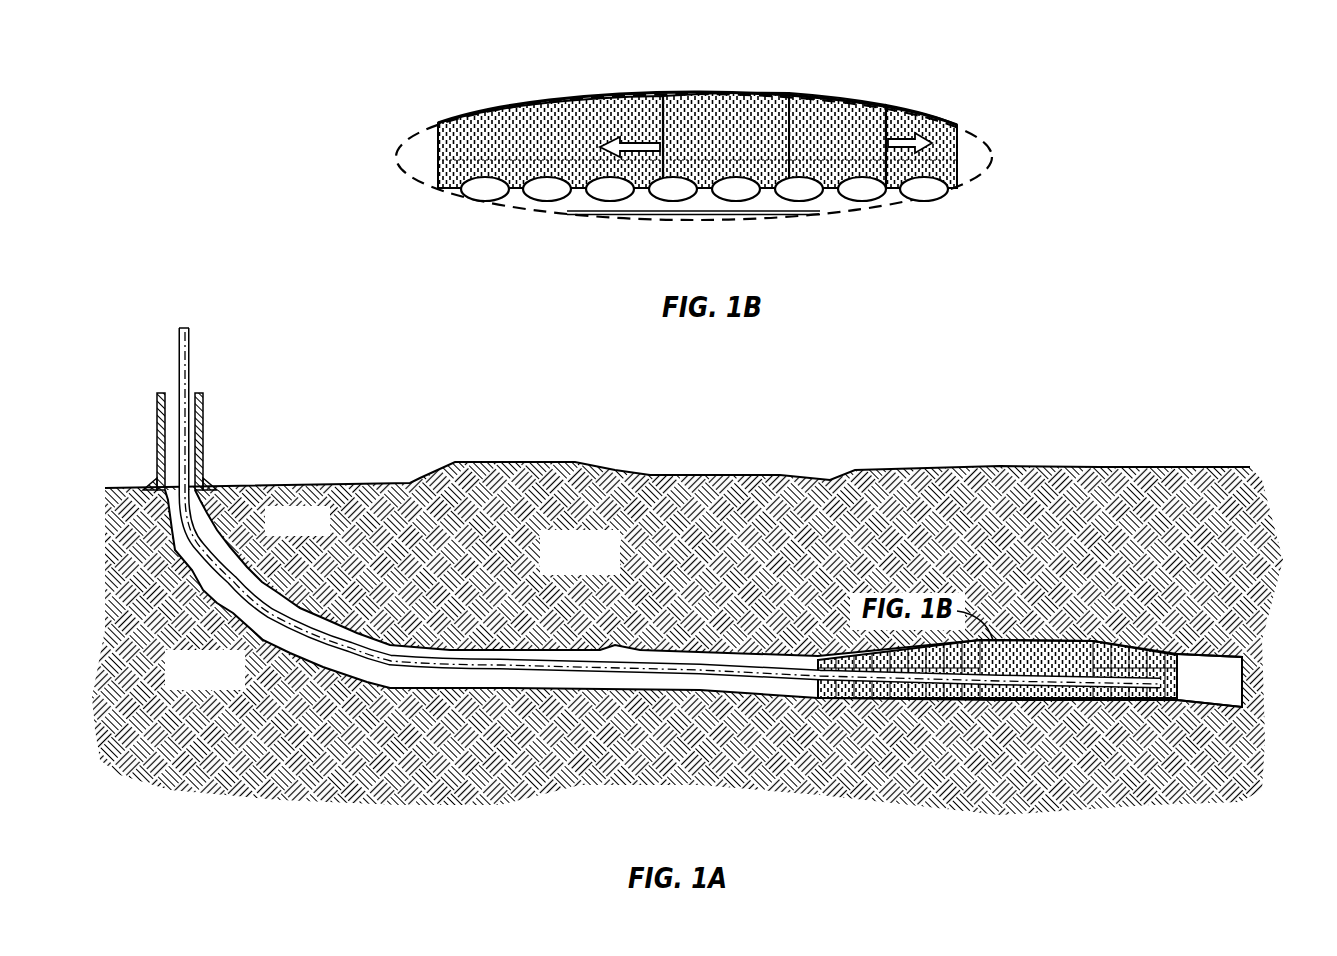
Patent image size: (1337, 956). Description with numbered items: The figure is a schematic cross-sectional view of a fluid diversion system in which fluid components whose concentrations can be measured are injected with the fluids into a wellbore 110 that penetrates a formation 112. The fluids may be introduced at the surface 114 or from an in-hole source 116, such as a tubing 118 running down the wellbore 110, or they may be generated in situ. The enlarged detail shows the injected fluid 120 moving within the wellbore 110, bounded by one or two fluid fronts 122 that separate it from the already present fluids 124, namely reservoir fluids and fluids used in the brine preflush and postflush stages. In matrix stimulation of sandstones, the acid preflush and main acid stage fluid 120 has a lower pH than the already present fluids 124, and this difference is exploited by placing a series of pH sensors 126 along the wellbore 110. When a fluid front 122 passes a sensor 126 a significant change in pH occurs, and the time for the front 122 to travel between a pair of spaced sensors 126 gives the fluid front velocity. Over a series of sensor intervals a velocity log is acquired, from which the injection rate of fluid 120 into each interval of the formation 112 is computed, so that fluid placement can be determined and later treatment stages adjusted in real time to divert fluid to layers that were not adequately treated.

In FIG. 1A, the wellbore 110 is at (212, 546).
In FIG. 1A, the formation 112 is at (602, 567).
In FIG. 1A, the surface 114 is at (172, 415).
In FIG. 1A, the in-hole source 116 is at (1223, 678).
In FIG. 1A, the tubing 118 is at (257, 607).
In FIG. 1B, the injected fluid 120 is at (752, 108).
In FIG. 1B, the fluid front 122 is at (663, 92).
In FIG. 1B, the already present fluids 124 is at (518, 103).
In FIG. 1B, the pH sensors 126 is at (805, 187).